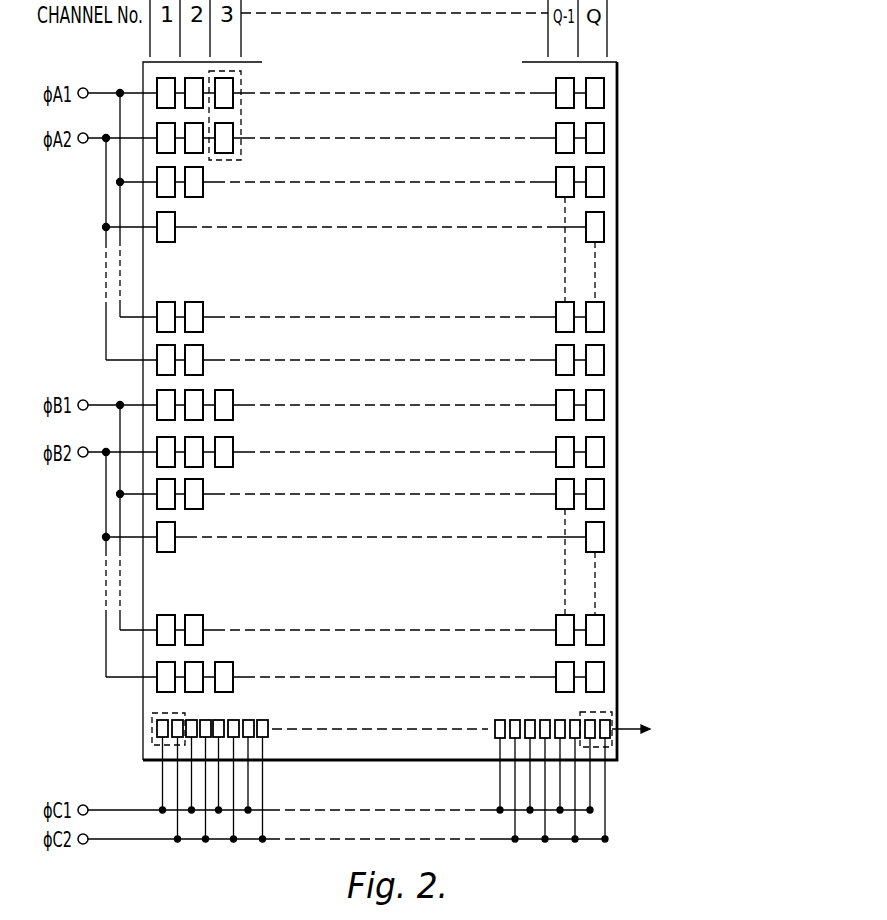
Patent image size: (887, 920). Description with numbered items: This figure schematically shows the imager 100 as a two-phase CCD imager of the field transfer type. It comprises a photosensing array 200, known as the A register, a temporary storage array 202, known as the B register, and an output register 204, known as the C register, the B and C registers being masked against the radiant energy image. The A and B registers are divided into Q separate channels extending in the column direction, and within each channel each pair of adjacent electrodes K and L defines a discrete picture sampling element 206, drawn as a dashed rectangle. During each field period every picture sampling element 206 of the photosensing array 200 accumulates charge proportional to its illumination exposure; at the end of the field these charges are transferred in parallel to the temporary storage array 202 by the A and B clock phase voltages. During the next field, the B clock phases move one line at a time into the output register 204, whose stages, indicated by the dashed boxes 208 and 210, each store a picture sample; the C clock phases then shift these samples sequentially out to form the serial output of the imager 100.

The imager 100 is at (712, 815).
The photosensing array 200 is at (625, 387).
The temporary storage array 202 is at (625, 702).
The output register 204 is at (153, 752).
The picture sampling element 206 is at (243, 92).
The stage of the C register 208 is at (175, 745).
The stage of the C register 210 is at (615, 745).